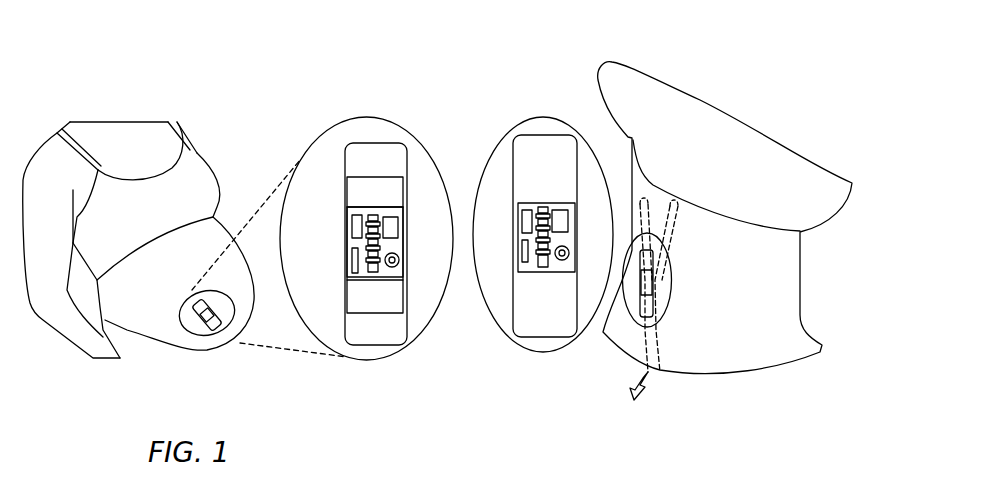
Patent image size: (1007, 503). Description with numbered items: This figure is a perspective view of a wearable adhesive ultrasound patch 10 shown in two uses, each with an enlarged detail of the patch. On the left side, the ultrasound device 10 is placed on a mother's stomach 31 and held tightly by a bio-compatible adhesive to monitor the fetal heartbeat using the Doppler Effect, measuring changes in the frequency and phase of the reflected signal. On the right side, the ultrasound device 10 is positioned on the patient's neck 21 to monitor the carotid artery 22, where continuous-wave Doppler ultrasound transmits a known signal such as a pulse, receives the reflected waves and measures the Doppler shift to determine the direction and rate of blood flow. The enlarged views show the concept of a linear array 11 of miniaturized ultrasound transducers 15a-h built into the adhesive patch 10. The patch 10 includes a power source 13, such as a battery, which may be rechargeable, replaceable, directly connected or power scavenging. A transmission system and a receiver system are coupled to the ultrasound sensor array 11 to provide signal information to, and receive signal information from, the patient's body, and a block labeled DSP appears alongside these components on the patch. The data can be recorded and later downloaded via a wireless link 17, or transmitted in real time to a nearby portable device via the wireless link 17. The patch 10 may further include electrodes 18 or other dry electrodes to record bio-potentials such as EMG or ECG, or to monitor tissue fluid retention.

The ultrasound device 10 is at (202, 327).
The linear array 11 is at (368, 262).
The power source 13 is at (389, 214).
The miniaturized ultrasound transducers 15a-h is at (373, 274).
The wireless link 17 is at (392, 270).
The electrodes 18 is at (405, 275).
The digital signal processor DSP is at (348, 277).
The neck 21 is at (813, 352).
The carotid artery 22 is at (645, 345).
The stomach 31 is at (153, 323).